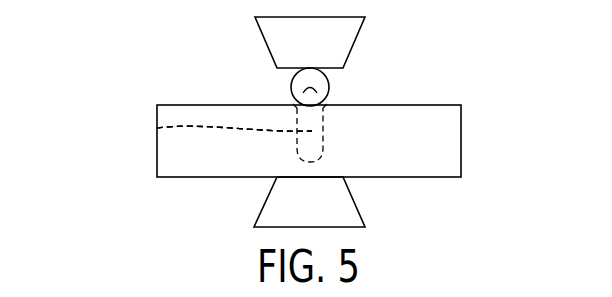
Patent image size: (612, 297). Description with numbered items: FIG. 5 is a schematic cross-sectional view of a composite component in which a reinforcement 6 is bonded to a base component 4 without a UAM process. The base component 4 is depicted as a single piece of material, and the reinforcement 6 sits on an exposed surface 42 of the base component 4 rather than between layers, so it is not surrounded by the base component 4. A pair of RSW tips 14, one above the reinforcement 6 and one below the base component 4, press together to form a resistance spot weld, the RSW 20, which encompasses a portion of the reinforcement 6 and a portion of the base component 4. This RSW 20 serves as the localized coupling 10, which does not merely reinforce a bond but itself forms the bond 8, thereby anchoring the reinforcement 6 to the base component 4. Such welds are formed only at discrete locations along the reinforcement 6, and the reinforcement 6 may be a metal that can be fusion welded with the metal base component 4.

The base component 4 is at (442, 136).
The reinforcement 6 is at (322, 88).
The bond 8 is at (157, 128).
The localized coupling 10 is at (157, 128).
The RSW tips 14 is at (280, 33).
The RSW 20 is at (157, 128).
The exposed surface 42 is at (192, 105).